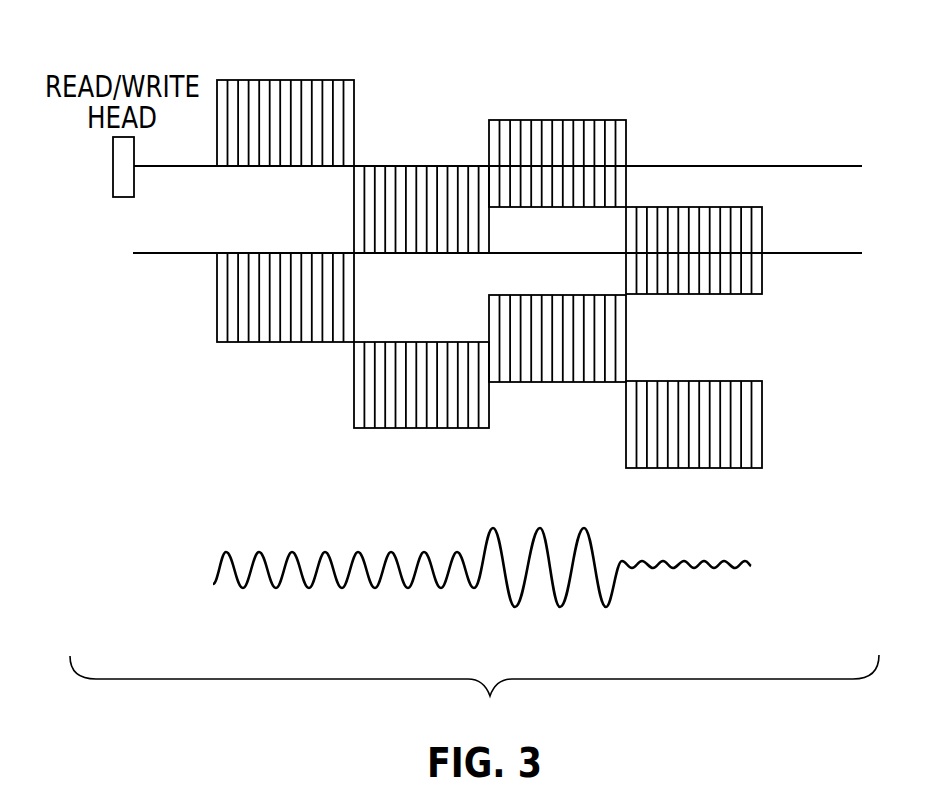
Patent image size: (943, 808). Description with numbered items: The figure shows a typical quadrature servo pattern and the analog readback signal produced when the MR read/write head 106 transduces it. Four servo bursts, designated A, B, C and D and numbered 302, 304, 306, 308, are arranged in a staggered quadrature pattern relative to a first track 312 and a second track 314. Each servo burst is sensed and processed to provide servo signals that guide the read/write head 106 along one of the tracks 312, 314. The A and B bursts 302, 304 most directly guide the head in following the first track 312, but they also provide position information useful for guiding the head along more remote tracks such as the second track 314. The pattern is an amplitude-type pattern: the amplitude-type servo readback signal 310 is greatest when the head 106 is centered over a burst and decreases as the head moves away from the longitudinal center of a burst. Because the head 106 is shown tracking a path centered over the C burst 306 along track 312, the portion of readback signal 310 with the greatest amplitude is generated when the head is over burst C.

The read/write head 106 is at (118, 197).
The A servo burst 302 is at (317, 80).
The B servo burst 304 is at (353, 214).
The C servo burst 306 is at (602, 120).
The D servo burst 308 is at (762, 283).
The servo readback signal 310 is at (251, 509).
The first track 312 is at (792, 163).
The second track 314 is at (820, 247).